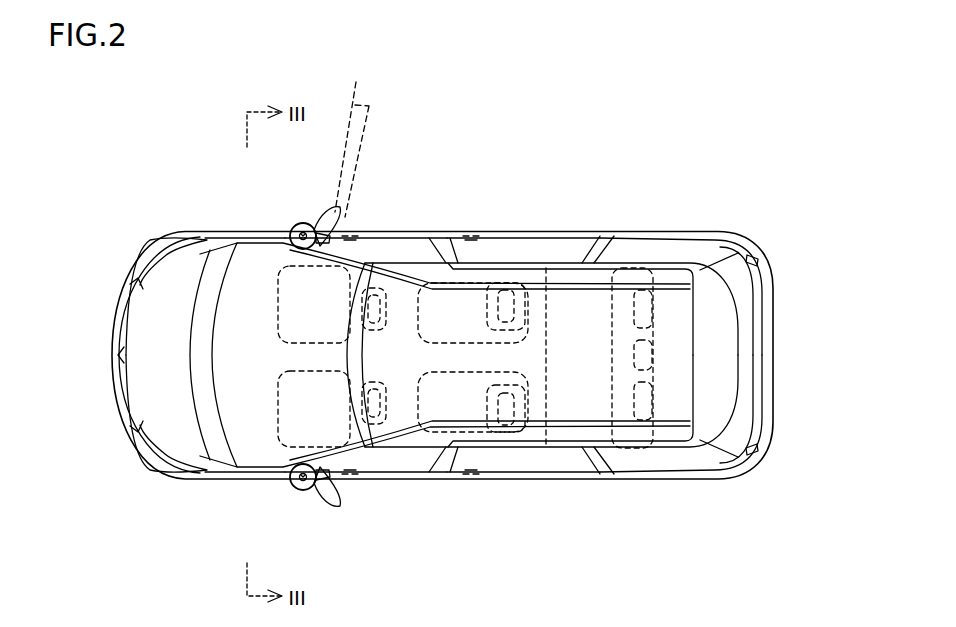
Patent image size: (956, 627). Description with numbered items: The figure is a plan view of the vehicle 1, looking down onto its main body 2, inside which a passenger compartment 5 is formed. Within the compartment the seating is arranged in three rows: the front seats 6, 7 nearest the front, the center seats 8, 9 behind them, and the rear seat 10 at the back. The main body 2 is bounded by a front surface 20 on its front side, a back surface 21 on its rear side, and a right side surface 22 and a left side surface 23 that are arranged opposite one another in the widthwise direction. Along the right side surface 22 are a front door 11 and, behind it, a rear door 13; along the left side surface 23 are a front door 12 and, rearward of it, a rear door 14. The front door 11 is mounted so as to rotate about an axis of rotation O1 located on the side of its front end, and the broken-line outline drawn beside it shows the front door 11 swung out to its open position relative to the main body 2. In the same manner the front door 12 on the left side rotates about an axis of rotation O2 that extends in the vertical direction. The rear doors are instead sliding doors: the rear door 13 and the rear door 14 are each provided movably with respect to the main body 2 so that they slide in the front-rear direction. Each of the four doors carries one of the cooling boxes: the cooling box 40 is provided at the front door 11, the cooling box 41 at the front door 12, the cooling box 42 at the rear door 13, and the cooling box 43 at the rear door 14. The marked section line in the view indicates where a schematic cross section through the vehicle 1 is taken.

The vehicle 1 is at (637, 139).
The main body 2 is at (678, 232).
The passenger compartment 5 is at (613, 246).
The front seat 6 is at (275, 238).
The front seat 7 is at (280, 480).
The center seat 8 is at (447, 262).
The center seat 9 is at (447, 448).
The rear seat 10 is at (637, 435).
The front door 11 is at (394, 235).
The front door 12 is at (390, 480).
The rear door 13 is at (528, 235).
The rear door 14 is at (505, 480).
The front surface 20 is at (110, 357).
The back surface 21 is at (776, 362).
The right side surface 22 is at (582, 236).
The left side surface 23 is at (585, 480).
The cooling box 40 is at (354, 233).
The cooling box 41 is at (355, 480).
The cooling box 42 is at (470, 236).
The cooling box 43 is at (469, 480).
The axis of rotation O1 is at (306, 222).
The axis of rotation O2 is at (305, 492).